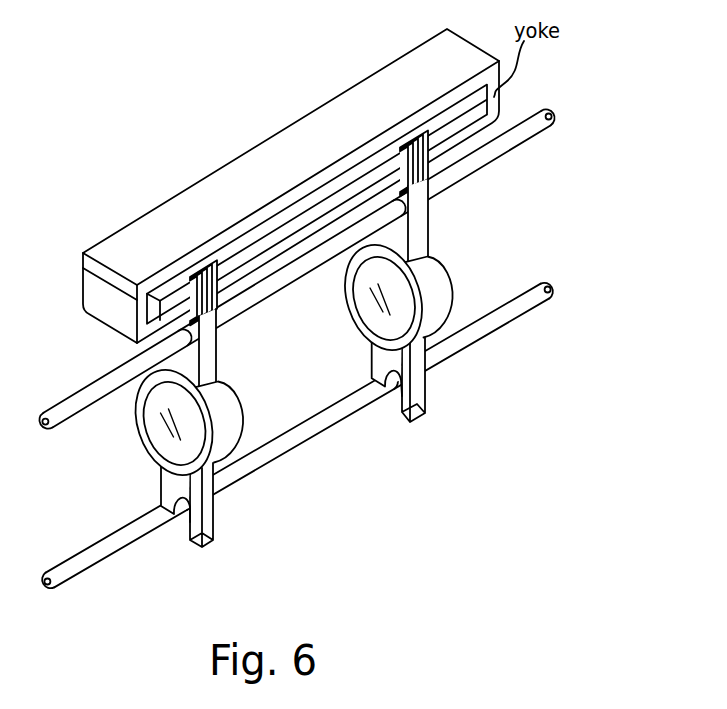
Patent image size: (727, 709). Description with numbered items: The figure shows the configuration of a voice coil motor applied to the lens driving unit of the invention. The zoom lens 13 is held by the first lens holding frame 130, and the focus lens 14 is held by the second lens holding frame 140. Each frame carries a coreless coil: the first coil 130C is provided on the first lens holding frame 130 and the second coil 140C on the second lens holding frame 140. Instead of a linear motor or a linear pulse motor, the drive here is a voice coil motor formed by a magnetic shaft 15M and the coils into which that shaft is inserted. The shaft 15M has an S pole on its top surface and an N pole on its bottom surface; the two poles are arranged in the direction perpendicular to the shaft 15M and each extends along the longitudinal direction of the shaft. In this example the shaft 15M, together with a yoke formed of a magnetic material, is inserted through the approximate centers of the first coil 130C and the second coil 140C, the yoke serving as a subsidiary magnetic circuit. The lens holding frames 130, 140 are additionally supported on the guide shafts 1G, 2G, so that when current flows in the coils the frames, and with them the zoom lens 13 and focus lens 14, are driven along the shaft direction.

The shaft 15M is at (503, 103).
The guide shaft 1G is at (537, 133).
The guide shaft 2G is at (525, 306).
The first lens holding frame 130 is at (440, 287).
The second lens holding frame 140 is at (232, 420).
The first coil 130C is at (410, 188).
The second coil 140C is at (228, 292).
The zoom lens 13 is at (356, 290).
The focus lens 14 is at (153, 407).